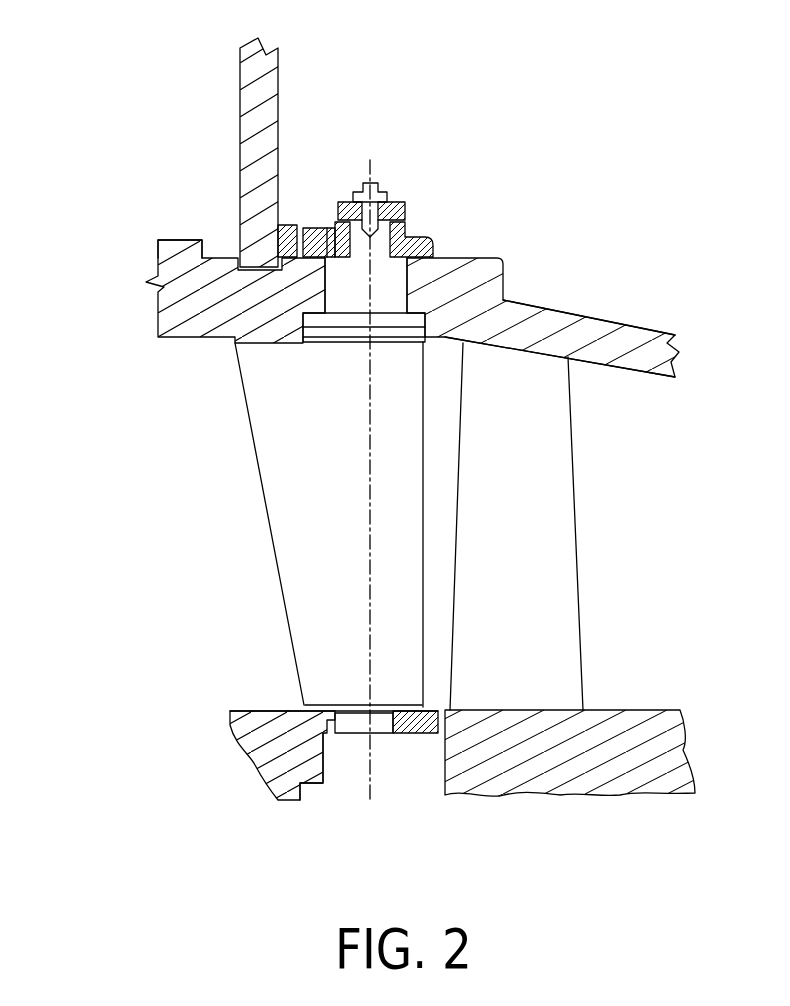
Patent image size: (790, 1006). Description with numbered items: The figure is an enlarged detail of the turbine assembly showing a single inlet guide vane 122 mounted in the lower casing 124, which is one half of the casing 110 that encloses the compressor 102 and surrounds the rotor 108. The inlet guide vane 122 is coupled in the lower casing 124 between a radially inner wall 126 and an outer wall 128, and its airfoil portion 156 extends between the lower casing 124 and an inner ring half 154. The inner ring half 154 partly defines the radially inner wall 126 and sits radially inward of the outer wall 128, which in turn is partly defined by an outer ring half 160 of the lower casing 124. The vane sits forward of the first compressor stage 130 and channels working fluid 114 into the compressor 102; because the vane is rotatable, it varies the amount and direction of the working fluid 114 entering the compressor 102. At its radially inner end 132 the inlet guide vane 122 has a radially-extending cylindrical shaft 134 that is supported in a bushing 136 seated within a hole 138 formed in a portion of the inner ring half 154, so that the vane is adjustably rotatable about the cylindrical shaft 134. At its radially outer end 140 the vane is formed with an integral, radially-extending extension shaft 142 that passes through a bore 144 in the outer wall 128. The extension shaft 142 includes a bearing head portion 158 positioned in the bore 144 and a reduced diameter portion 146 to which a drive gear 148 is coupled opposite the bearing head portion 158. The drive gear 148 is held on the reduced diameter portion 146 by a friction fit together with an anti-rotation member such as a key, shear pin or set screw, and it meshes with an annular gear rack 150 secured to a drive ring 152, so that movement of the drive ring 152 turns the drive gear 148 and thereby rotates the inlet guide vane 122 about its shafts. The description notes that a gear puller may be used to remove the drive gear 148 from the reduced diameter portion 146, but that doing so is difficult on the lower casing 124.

The compressor 102 is at (543, 280).
The rotor 108 is at (537, 787).
The casing 110 is at (162, 217).
The working fluid 114 is at (198, 510).
The inlet guide vane 122 is at (432, 568).
The lower casing 124 is at (630, 300).
The radially inner wall 126 is at (258, 710).
The outer wall 128 is at (163, 343).
The first compressor stage 130 is at (552, 628).
The radially inner end 132 is at (228, 655).
The cylindrical shaft 134 is at (385, 715).
The bushing 136 is at (300, 787).
The hole 138 is at (348, 762).
The radially outer end 140 is at (458, 225).
The extension shaft 142 is at (393, 290).
The bore 144 is at (435, 247).
The reduced diameter portion 146 is at (338, 292).
The drive gear 148 is at (407, 203).
The annular gear rack 150 is at (288, 226).
The drive ring 152 is at (240, 115).
The inner ring half 154 is at (215, 740).
The airfoil portion 156 is at (300, 413).
The bearing head portion 158 is at (407, 333).
The outer ring half 160 is at (150, 262).